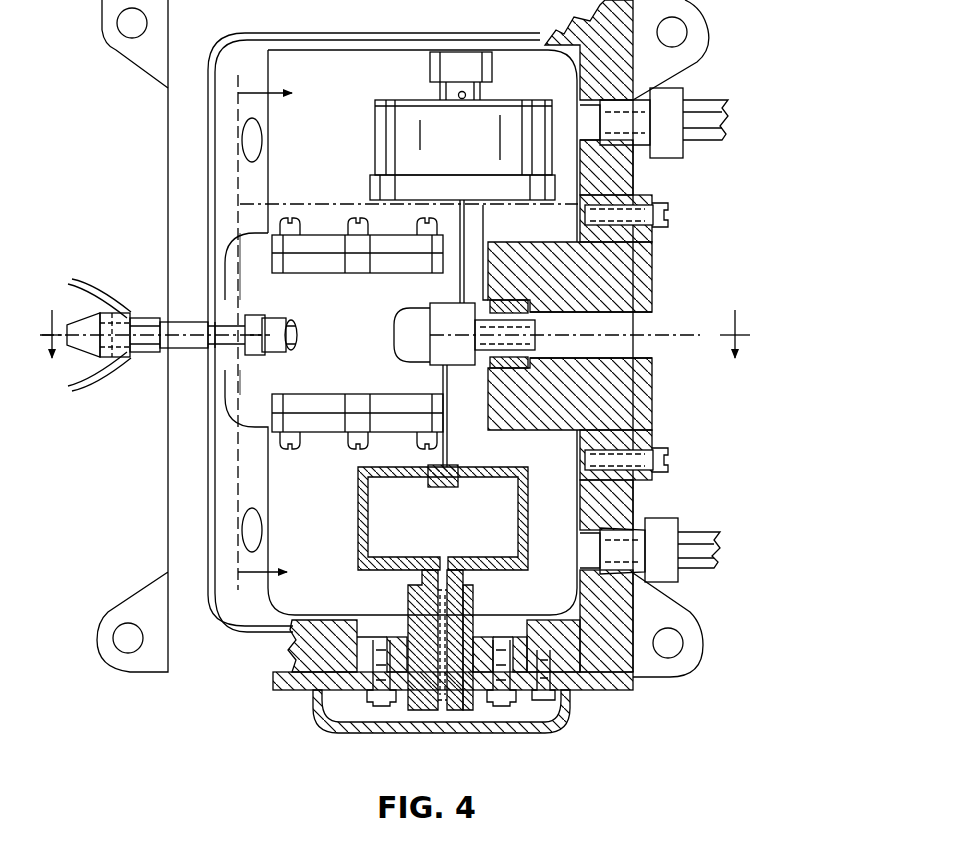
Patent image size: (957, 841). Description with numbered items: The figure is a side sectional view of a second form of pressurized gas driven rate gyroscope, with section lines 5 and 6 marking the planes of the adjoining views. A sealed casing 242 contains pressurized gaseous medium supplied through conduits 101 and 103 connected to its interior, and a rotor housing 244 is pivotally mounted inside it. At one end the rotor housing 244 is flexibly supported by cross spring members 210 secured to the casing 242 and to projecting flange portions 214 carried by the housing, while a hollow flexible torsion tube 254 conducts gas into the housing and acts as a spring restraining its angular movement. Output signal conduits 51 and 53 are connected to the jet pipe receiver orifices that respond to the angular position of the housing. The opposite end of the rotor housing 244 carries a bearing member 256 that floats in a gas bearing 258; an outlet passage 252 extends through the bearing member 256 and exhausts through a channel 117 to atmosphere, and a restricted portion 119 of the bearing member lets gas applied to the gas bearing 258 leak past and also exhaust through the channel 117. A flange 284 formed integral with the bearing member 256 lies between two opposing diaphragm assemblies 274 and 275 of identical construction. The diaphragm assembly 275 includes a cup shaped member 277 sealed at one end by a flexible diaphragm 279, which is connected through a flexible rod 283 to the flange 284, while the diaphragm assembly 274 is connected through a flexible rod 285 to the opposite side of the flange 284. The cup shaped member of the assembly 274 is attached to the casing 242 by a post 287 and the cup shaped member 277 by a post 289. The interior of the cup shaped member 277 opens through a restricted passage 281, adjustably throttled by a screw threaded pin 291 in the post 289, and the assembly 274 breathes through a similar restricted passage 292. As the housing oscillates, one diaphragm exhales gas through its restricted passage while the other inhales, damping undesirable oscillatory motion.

The section line 5- 5 is at (396, 322).
The section line 6- 6 is at (255, 332).
The output signal conduit 51 is at (94, 285).
The output signal conduit 53 is at (90, 362).
The conduit 101 is at (697, 106).
The conduit 103 is at (686, 534).
The channel 117 is at (636, 314).
The restricted portion 119 is at (530, 310).
The cross spring member 210 is at (248, 262).
The projecting flange portion 214 is at (305, 303).
The sealed casing 242 is at (208, 155).
The rotor housing 244 is at (370, 347).
The outlet passage 252 is at (540, 337).
The torsion tube 254 is at (250, 318).
The bearing member 256 is at (496, 366).
The gas bearing 258 is at (480, 300).
The diaphragm assembly 274 is at (372, 144).
The diaphragm assembly 275 is at (355, 524).
The cup shaped member 277 is at (528, 522).
The flexible diaphragm 279 is at (410, 470).
The restricted passage 281 is at (462, 577).
The flexible rod 283 is at (448, 425).
The flange 284 is at (466, 336).
The flexible rod 285 is at (466, 233).
The post 287 is at (440, 90).
The post 289 is at (420, 578).
The adjustable pin 291 is at (473, 601).
The restricted passage 292 is at (467, 95).